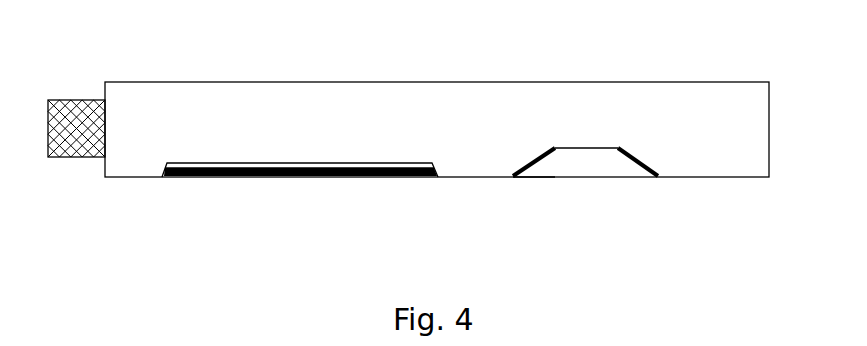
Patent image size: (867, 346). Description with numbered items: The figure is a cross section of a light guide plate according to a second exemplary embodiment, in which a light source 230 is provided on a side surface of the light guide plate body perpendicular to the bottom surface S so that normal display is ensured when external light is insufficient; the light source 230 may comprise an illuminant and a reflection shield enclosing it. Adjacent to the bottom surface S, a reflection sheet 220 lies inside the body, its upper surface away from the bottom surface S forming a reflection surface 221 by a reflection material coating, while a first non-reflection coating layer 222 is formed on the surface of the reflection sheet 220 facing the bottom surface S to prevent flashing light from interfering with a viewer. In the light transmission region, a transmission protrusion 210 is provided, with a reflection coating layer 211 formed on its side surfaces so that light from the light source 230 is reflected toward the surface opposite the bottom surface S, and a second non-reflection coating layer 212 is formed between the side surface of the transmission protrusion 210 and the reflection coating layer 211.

The bottom surface S is at (730, 178).
The light source 230 is at (67, 100).
The reflection sheet 220 is at (303, 137).
The reflection surface 221 is at (345, 163).
The first non-reflection coating layer 222 is at (212, 178).
The transmission protrusion 210 is at (575, 133).
The reflection coating layer 211 is at (649, 166).
The second non-reflection coating layer 212 is at (530, 173).